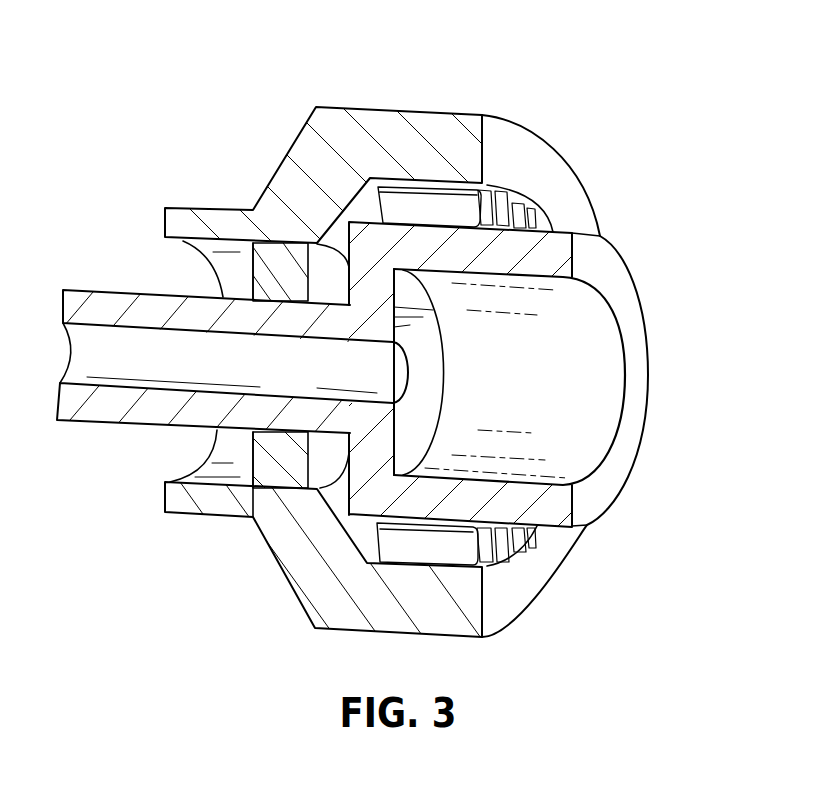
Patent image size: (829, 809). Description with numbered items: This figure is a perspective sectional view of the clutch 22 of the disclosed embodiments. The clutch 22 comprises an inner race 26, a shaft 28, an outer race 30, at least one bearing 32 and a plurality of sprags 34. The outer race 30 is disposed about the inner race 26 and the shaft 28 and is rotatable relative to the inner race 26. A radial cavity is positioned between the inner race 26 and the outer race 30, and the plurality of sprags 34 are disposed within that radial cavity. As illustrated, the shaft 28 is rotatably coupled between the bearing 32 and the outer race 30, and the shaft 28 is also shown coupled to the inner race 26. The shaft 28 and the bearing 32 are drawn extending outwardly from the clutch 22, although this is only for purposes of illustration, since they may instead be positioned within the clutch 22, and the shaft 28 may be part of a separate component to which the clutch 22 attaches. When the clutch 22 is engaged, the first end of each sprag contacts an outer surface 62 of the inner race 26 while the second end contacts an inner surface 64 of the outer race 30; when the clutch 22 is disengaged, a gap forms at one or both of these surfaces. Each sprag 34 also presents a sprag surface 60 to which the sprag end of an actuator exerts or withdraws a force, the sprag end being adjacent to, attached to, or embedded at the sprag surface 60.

The clutch 22 is at (143, 86).
The inner race 26 is at (648, 378).
The shaft 28 is at (112, 290).
The outer race 30 is at (438, 123).
The bearing 32 is at (272, 288).
The sprags 34 is at (518, 192).
The sprag surface 60 is at (440, 547).
The outer surface of the inner race 62 is at (557, 531).
The inner surface of the outer race 64 is at (493, 557).